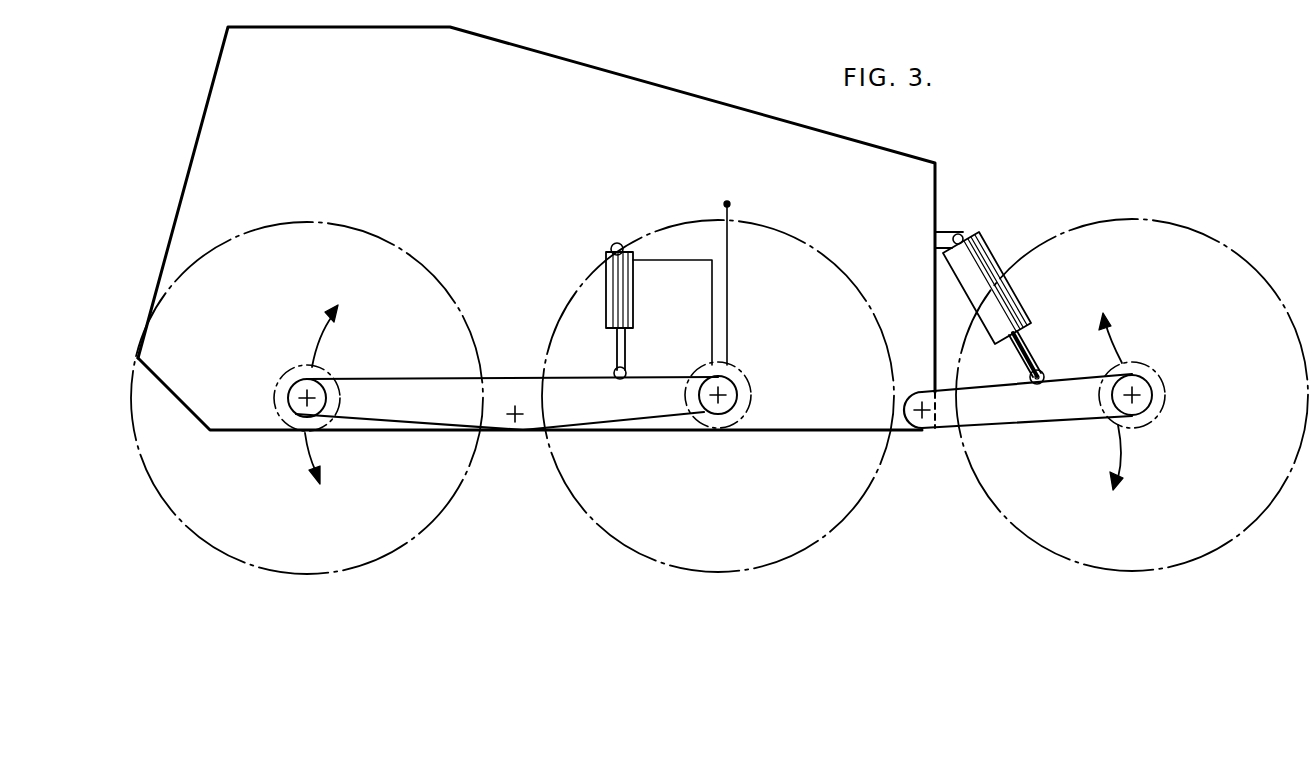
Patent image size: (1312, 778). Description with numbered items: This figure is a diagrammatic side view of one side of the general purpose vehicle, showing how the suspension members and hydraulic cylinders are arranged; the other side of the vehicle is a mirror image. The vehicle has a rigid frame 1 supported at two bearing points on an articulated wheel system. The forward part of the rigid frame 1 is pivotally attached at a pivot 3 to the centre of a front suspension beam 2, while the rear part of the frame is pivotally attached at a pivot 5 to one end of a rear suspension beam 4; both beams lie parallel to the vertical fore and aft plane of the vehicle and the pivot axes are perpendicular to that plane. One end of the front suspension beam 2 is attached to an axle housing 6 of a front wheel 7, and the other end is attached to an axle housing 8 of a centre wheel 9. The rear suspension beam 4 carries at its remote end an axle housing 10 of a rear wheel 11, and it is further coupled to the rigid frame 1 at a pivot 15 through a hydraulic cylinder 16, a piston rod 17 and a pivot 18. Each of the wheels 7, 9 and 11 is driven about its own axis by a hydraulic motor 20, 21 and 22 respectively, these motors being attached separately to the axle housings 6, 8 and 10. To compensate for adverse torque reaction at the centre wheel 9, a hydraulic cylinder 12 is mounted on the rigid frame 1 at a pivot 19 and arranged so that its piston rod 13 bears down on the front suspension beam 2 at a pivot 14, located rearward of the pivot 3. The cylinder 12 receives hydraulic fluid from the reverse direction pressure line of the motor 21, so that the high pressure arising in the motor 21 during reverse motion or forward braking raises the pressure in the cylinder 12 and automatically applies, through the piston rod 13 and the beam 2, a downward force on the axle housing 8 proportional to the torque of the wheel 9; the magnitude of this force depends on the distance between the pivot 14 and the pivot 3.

The rigid frame 1 is at (526, 49).
The front suspension beam 2 is at (499, 392).
The pivot 3 is at (517, 422).
The rear suspension beam 4 is at (968, 410).
The pivot 5 is at (920, 417).
The axle housing 6 is at (300, 409).
The front wheel 7 is at (367, 551).
The axle housing 8 is at (709, 408).
The centre wheel 9 is at (682, 548).
The axle housing 10 is at (1107, 413).
The rear wheel 11 is at (1037, 533).
The hydraulic cylinder 12 is at (610, 273).
The piston rod 13 is at (614, 345).
The pivot 14 is at (619, 380).
The pivot 15 is at (959, 234).
The hydraulic cylinder 16 is at (977, 283).
The piston rod 17 is at (1032, 343).
The pivot 18 is at (1041, 371).
The pivot 19 is at (617, 243).
The hydraulic motor 20 is at (323, 424).
The hydraulic motor 21 is at (733, 410).
The hydraulic motor 22 is at (1117, 425).